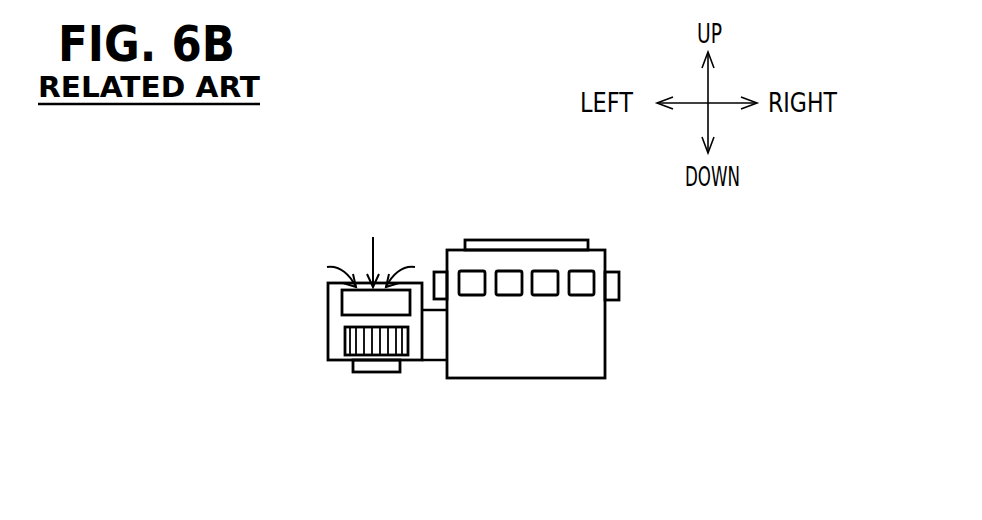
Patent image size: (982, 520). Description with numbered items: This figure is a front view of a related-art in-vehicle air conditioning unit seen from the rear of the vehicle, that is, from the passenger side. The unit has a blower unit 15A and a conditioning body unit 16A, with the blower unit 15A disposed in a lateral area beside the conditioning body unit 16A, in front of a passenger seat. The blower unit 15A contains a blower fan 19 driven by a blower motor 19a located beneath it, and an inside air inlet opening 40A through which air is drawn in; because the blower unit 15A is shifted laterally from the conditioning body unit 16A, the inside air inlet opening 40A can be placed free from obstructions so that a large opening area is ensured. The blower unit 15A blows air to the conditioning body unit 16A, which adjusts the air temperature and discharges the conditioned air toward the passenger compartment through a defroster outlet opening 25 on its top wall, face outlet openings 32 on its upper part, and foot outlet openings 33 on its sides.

The blower unit 15A is at (326, 318).
The inside air inlet opening 40A is at (347, 300).
The blower fan 19 is at (388, 343).
The blower motor 19a is at (360, 371).
The conditioning body unit 16A is at (609, 350).
The defroster outlet opening 25 is at (562, 240).
The face outlet openings 32 is at (578, 282).
The foot outlet openings 33 is at (436, 272).